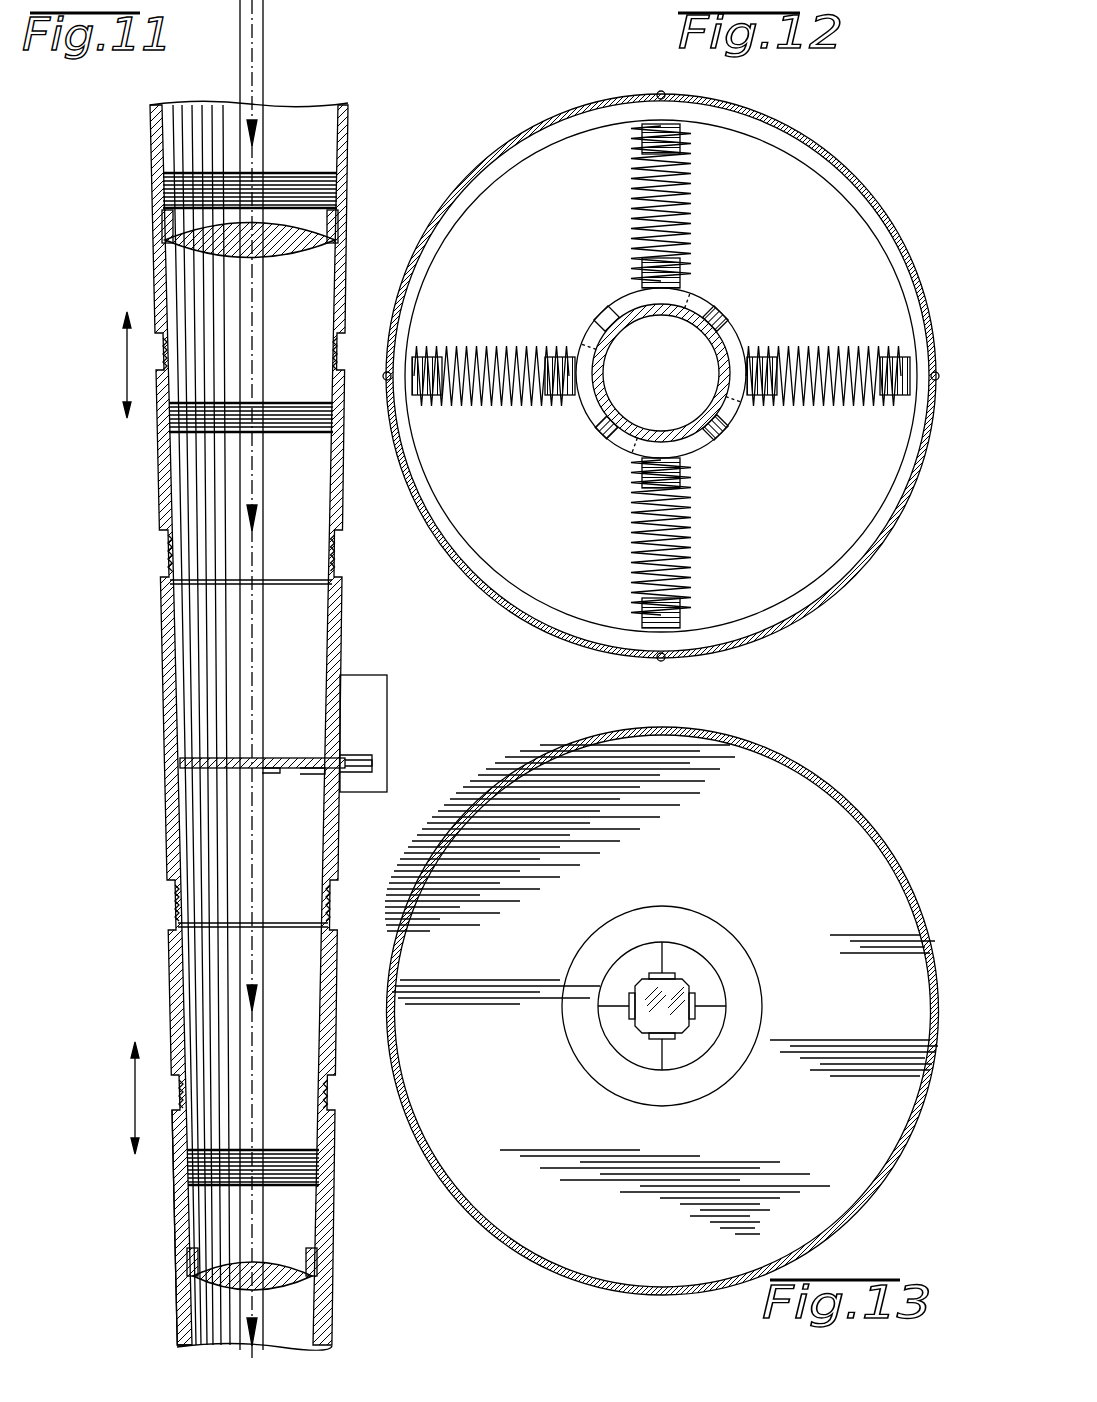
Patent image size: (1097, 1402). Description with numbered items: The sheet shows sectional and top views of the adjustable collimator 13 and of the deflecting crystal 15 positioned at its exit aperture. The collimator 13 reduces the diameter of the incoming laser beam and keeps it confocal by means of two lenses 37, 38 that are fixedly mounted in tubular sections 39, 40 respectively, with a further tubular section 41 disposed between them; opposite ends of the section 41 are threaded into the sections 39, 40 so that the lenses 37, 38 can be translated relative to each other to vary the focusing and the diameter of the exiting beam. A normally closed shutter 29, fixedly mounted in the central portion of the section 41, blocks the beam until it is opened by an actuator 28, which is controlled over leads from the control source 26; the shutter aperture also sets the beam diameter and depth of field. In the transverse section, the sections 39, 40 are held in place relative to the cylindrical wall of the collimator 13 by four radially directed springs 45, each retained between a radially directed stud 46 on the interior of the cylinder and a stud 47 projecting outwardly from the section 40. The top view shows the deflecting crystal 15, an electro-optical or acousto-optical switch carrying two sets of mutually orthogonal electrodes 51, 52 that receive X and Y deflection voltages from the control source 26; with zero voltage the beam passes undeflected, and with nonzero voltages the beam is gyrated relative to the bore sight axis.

In FIG. 11, the adjustable collimator 13 is at (148, 633).
In FIG. 12, the adjustable collimator 13 is at (510, 116).
In FIG. 13, the adjustable collimator 13 is at (858, 793).
In FIG. 13, the deflecting crystal 15 is at (675, 993).
In FIG. 11, the control source 26 is at (395, 744).
In FIG. 11, the actuator 28 is at (389, 712).
In FIG. 11, the shutter 29 is at (349, 757).
In FIG. 11, the lens 37 is at (163, 230).
In FIG. 11, the lens 38 is at (292, 1270).
In FIG. 11, the tubular section 39 is at (158, 305).
In FIG. 11, the tubular section 40 is at (180, 1300).
In FIG. 12, the tubular section 40 is at (737, 322).
In FIG. 11, the tubular section 41 is at (168, 770).
In FIG. 12, the radially directed spring 45 is at (690, 215).
In FIG. 12, the radially directed stud 46 is at (650, 130).
In FIG. 12, the stud 47 is at (690, 266).
In FIG. 13, the electrode pair 51 is at (632, 1010).
In FIG. 13, the electrode pair 52 is at (667, 974).